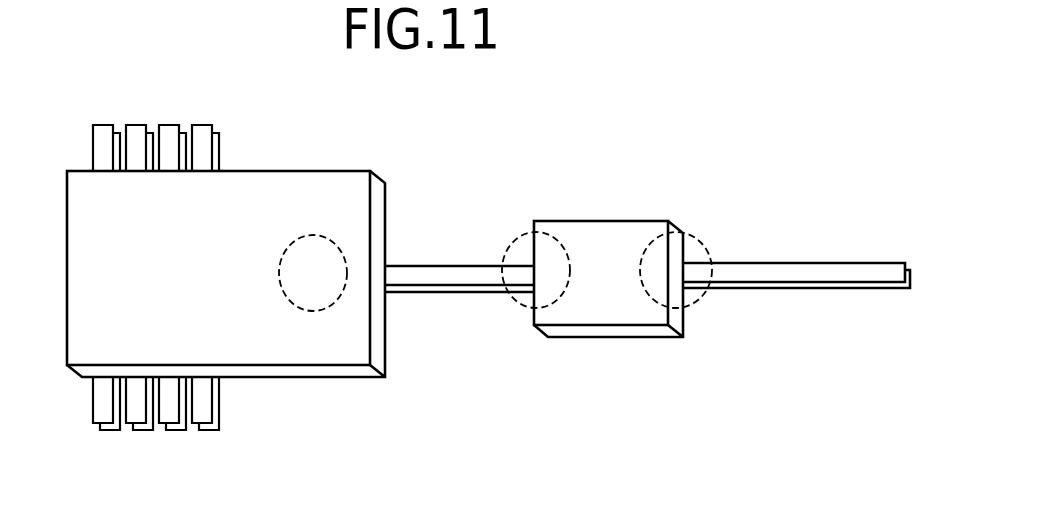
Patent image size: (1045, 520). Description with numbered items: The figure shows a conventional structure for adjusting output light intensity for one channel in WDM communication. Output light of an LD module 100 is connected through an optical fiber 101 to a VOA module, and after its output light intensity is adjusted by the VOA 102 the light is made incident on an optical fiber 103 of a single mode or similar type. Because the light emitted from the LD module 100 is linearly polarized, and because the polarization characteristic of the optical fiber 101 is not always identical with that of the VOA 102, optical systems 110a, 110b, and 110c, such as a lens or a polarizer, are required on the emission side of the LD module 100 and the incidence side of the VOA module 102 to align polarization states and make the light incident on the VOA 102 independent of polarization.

The LD module 100 is at (301, 171).
The optical fiber 101 is at (430, 265).
The VOA 102 is at (604, 221).
The optical fiber 103 is at (823, 263).
The optical system 110a is at (318, 311).
The optical system 110b is at (507, 302).
The optical system 110c is at (698, 298).